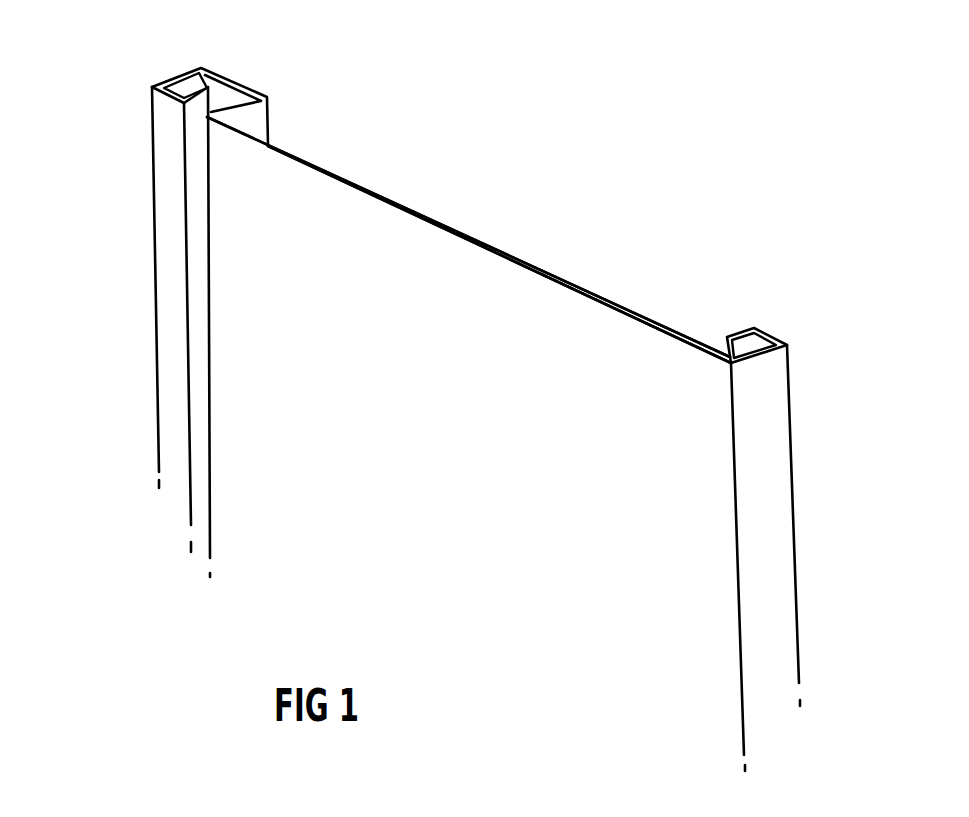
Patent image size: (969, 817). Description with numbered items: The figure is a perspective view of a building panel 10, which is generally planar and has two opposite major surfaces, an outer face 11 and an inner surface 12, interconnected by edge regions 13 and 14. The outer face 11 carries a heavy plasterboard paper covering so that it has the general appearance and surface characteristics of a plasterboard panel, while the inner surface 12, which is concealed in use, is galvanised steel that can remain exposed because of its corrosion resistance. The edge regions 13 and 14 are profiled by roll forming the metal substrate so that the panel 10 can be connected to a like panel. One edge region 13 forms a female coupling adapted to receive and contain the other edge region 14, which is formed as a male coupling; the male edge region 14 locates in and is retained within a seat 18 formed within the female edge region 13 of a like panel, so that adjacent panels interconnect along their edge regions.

The building panel 10 is at (429, 197).
The outer face 11 is at (236, 333).
The inner surface 12 is at (619, 300).
The female edge region 13 is at (156, 183).
The male edge region 14 is at (758, 433).
The seat 18 is at (181, 74).